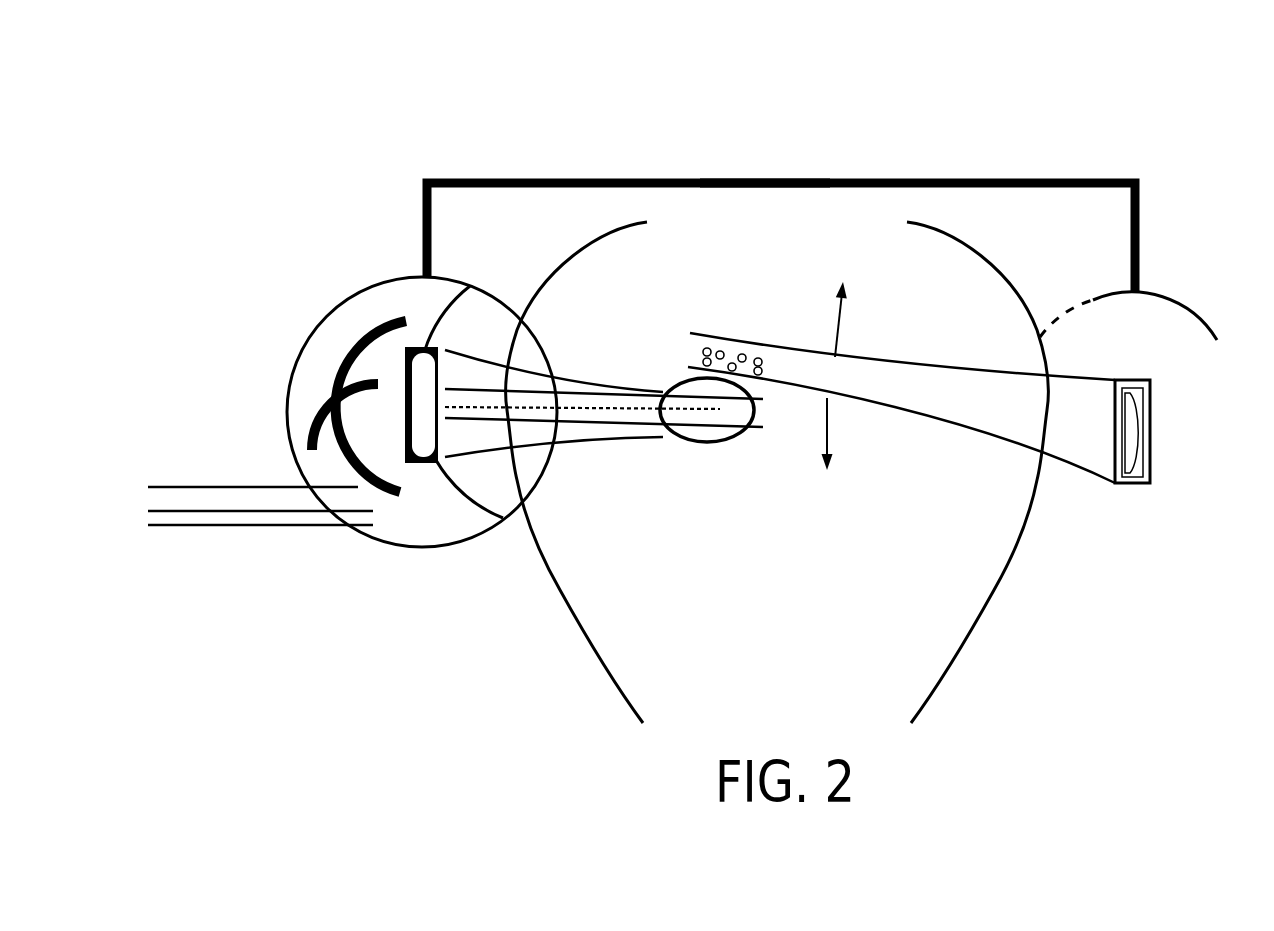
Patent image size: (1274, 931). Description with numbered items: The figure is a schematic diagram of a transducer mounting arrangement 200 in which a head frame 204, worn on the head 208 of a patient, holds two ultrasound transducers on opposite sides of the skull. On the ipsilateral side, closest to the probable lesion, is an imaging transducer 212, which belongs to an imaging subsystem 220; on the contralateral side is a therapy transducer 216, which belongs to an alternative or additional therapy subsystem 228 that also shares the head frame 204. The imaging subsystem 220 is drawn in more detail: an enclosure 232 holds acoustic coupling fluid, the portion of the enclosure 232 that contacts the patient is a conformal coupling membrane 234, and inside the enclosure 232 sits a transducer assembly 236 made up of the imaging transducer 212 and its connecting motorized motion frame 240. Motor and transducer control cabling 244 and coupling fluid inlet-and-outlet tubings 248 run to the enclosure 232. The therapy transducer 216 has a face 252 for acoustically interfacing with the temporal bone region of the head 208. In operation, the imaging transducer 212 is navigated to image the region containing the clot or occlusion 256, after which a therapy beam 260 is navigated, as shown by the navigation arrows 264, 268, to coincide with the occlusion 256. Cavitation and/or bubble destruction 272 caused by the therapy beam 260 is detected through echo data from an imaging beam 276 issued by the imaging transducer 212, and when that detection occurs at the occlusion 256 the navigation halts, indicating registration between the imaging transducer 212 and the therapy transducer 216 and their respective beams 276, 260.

The transducer mounting arrangement 200 is at (762, 166).
The head frame 204 is at (952, 178).
The head 208 is at (1013, 560).
The imaging transducer 212 is at (437, 465).
The therapy transducer 216 is at (1133, 483).
The imaging subsystem 220 is at (347, 179).
The therapy subsystem 228 is at (1163, 167).
The enclosure 232 is at (470, 285).
The conformal coupling membrane 234 is at (503, 518).
The transducer assembly 236 is at (357, 319).
The motorized motion frame 240 is at (314, 374).
The motor and transducer control cabling 244 is at (202, 487).
The coupling fluid inlet-and-outlet tubings 248 is at (202, 527).
The face 252 is at (1110, 430).
The occlusion 256 is at (702, 443).
The therapy beam 260 is at (908, 360).
The navigation arrow 264 is at (835, 327).
The navigation arrow 268 is at (818, 417).
The cavitation and/or bubble destruction 272 is at (681, 348).
The imaging beam 276 is at (586, 382).